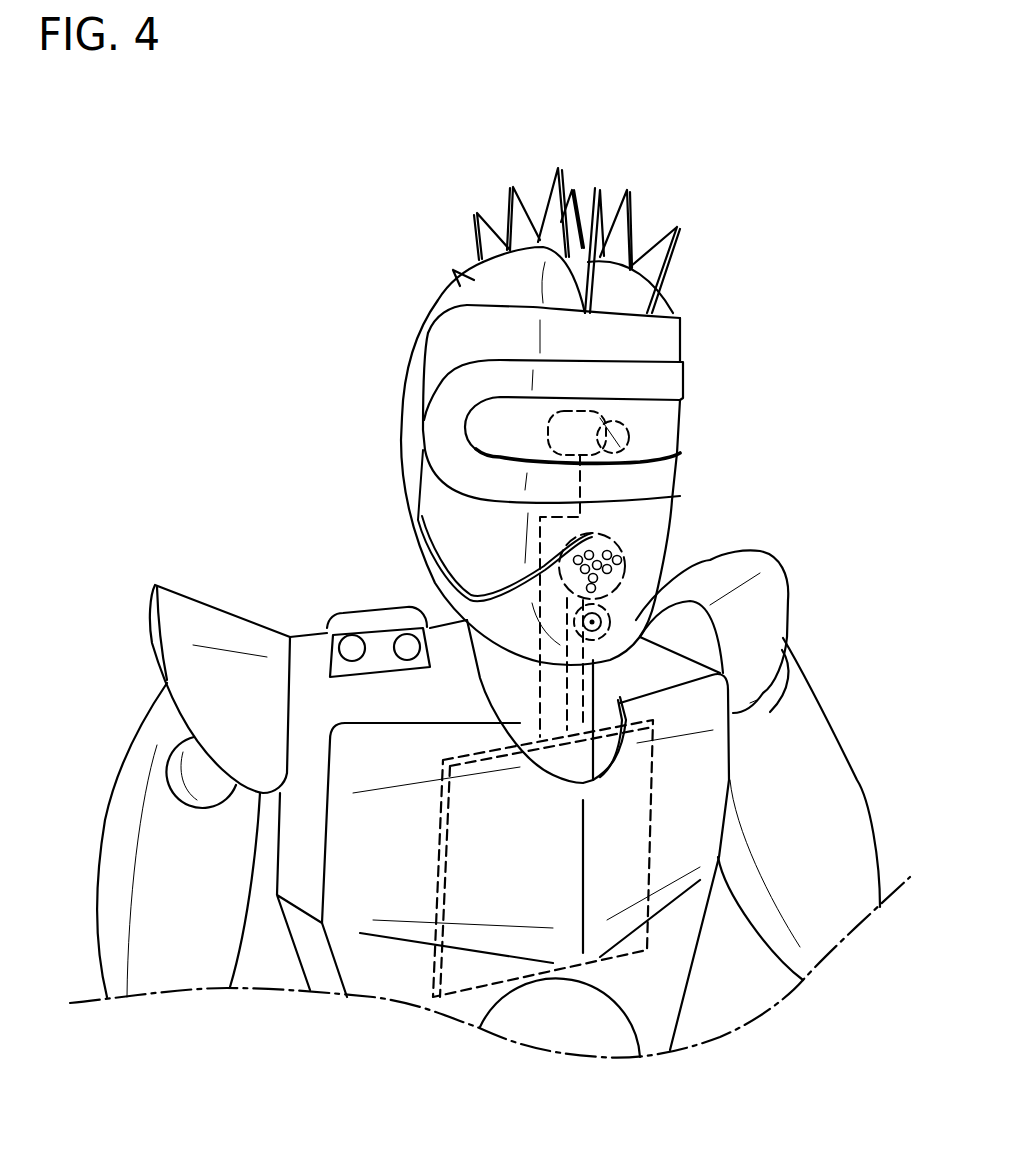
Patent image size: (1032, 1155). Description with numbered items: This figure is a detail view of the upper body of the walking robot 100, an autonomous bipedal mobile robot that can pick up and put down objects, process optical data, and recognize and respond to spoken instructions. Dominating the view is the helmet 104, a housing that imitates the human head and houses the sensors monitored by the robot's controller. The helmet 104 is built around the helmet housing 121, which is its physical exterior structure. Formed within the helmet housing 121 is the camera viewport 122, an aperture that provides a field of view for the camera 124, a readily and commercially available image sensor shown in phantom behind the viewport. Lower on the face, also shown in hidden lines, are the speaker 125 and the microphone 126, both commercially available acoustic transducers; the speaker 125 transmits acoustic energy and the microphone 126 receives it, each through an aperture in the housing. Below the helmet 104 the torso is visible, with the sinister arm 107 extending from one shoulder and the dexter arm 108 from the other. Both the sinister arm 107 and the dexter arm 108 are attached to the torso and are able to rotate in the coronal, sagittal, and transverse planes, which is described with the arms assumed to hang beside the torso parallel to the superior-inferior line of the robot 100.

The walking robot 100 is at (177, 197).
The helmet 104 is at (365, 238).
The sinister arm 107 is at (813, 727).
The dexter arm 108 is at (130, 787).
The helmet housing 121 is at (658, 340).
The camera viewport 122 is at (660, 428).
The camera 124 is at (582, 425).
The speaker 125 is at (613, 570).
The microphone 126 is at (600, 622).